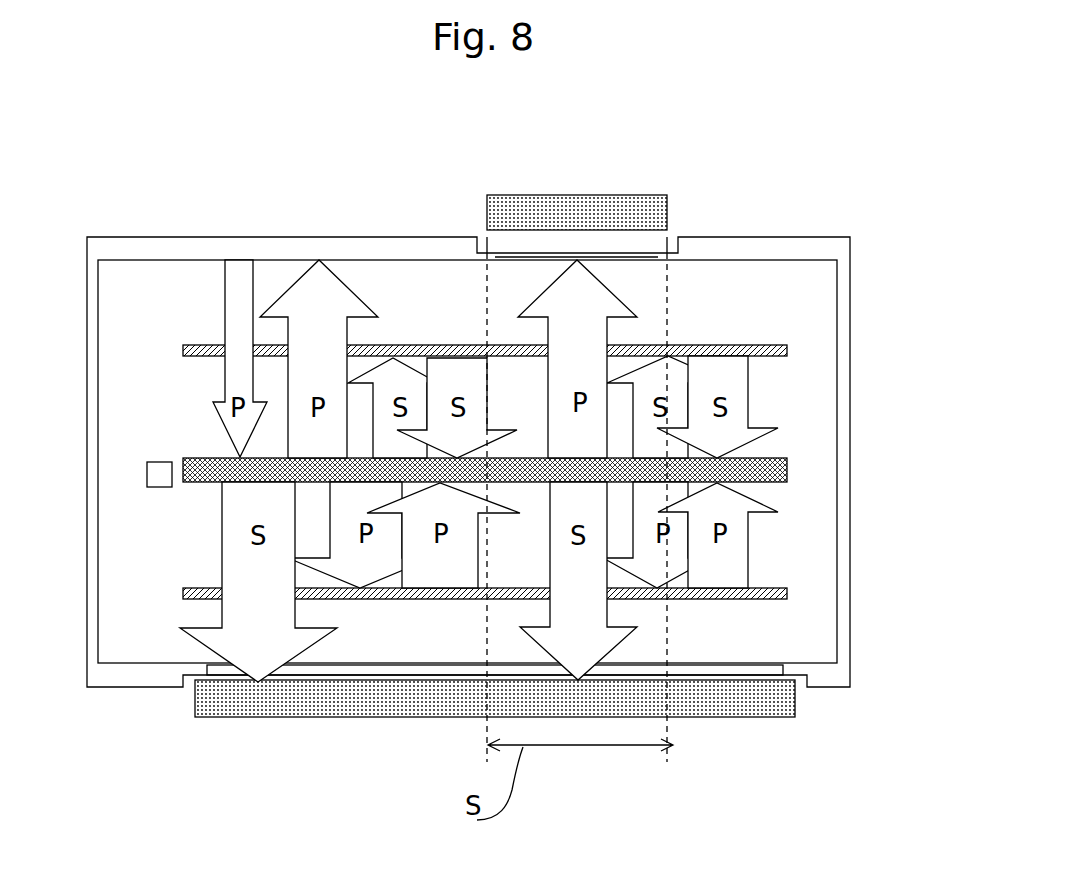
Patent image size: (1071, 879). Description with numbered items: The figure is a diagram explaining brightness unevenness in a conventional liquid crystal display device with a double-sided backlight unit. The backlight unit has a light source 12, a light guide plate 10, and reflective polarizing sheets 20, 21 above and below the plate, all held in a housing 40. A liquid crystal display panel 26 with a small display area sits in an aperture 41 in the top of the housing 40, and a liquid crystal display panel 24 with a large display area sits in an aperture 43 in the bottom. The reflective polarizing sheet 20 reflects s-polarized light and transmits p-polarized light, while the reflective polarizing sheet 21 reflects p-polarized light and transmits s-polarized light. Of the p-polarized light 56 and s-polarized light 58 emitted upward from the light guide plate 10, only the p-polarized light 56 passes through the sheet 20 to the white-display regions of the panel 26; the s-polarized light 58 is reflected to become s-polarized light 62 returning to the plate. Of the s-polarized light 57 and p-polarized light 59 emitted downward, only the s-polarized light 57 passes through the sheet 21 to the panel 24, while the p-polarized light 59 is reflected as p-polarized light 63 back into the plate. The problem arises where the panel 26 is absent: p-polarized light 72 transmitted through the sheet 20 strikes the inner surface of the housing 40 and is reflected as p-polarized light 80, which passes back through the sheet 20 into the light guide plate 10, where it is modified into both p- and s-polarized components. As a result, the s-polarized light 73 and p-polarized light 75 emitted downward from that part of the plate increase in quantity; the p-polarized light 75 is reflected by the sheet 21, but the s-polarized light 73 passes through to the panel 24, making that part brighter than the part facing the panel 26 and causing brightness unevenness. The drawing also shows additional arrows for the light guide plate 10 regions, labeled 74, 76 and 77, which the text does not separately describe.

The light guide plate 10 is at (785, 466).
The light source 12 is at (147, 478).
The reflective polarizing sheet 20 is at (788, 352).
The reflective polarizing sheet 21 is at (788, 600).
The liquid crystal display panel 24 is at (568, 718).
The liquid crystal display panel 26 is at (675, 208).
The housing 40 is at (140, 250).
The aperture 41 is at (530, 250).
The aperture 43 is at (187, 680).
The p-polarized light 56 is at (573, 312).
The s-polarized light 57 is at (582, 647).
The s-polarized light 58 is at (655, 380).
The p-polarized light 59 is at (662, 565).
The s-polarized light 62 is at (713, 375).
The p-polarized light 63 is at (725, 575).
The p-polarized light 72 is at (315, 310).
The s-polarized light 73 is at (252, 640).
The magnetic flux arrow S 74 is at (402, 377).
The p-polarized light 75 is at (370, 565).
The magnetic flux arrow S 76 is at (450, 380).
The magnetic flux arrow P 77 is at (448, 568).
The p-polarized light 80 is at (240, 283).